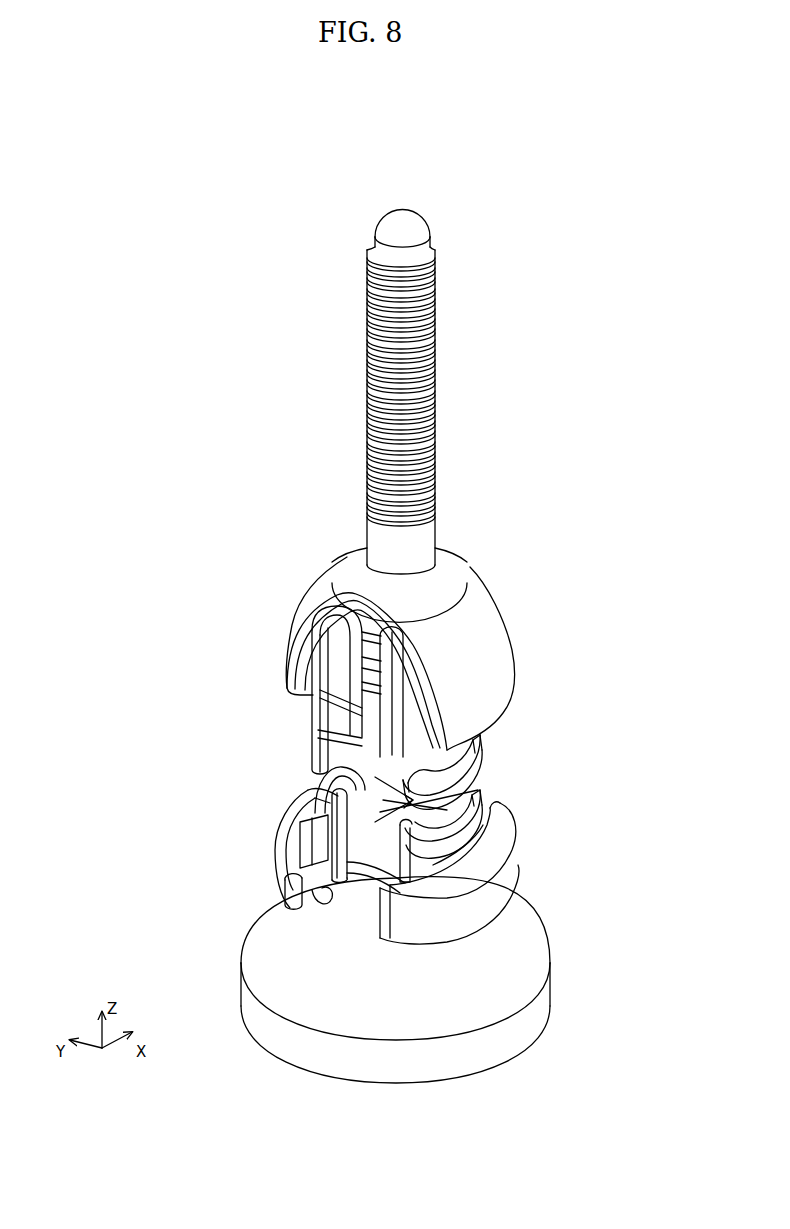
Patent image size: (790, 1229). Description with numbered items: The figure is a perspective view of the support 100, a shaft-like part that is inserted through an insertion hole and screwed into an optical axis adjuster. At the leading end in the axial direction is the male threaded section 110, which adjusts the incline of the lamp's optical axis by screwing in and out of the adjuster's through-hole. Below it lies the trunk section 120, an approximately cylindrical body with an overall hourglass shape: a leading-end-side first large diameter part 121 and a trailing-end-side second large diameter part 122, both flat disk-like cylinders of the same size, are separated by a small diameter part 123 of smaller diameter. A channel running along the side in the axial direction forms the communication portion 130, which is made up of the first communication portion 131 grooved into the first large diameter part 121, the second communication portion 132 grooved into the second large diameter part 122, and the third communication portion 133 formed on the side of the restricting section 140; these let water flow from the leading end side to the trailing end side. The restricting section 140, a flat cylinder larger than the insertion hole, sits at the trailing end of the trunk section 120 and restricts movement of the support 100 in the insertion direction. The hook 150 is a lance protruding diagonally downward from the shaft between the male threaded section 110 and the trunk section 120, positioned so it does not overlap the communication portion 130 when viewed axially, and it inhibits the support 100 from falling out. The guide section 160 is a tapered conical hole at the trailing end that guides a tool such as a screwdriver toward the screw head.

The support 100 is at (578, 270).
The male threaded section 110 is at (434, 378).
The trunk section 120 is at (612, 727).
The first large diameter part 121 is at (456, 777).
The second large diameter part 122 is at (478, 846).
The small diameter part 123 is at (466, 801).
The communication portion 130 is at (200, 653).
The first communication portion 131 is at (372, 752).
The second communication portion 132 is at (370, 835).
The third communication portion 133 is at (360, 897).
The restricting section 140 is at (498, 891).
The hook 150 is at (492, 655).
The guide section 160 is at (527, 1013).